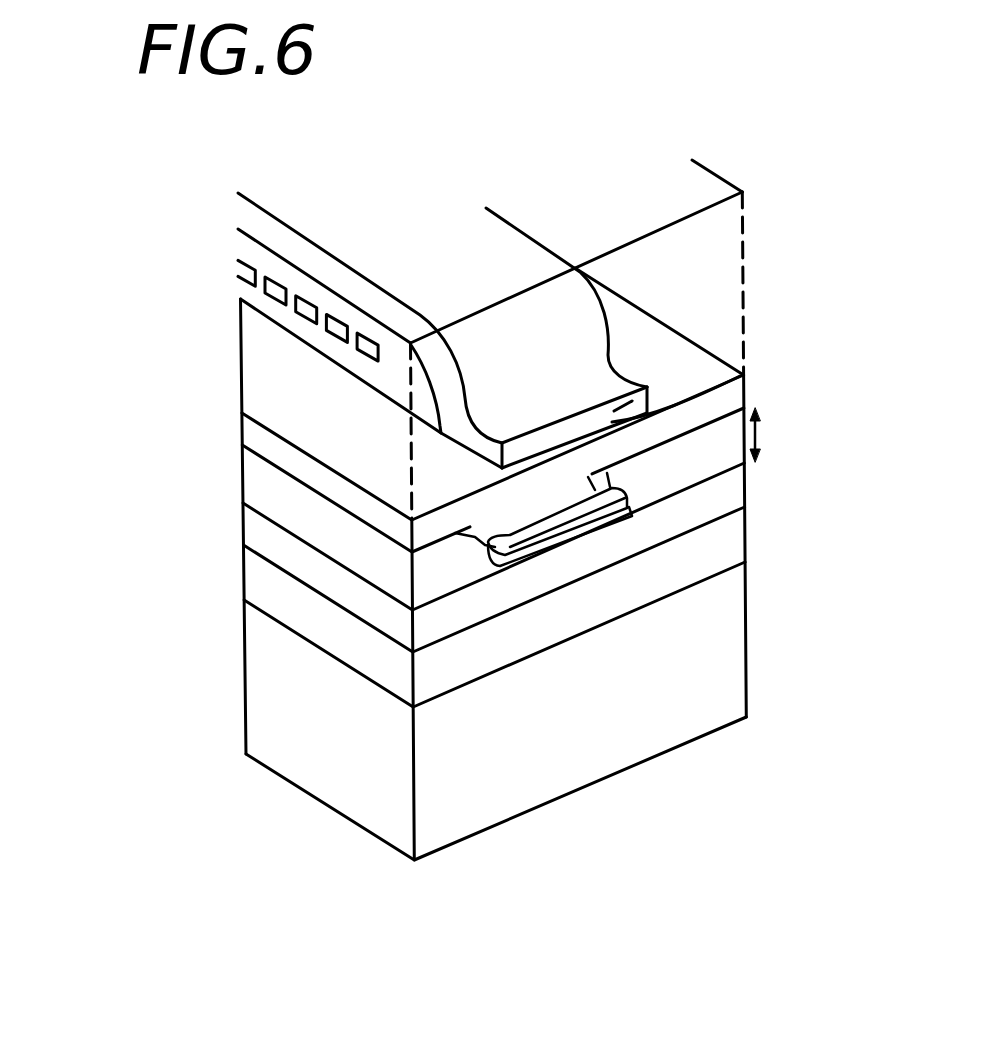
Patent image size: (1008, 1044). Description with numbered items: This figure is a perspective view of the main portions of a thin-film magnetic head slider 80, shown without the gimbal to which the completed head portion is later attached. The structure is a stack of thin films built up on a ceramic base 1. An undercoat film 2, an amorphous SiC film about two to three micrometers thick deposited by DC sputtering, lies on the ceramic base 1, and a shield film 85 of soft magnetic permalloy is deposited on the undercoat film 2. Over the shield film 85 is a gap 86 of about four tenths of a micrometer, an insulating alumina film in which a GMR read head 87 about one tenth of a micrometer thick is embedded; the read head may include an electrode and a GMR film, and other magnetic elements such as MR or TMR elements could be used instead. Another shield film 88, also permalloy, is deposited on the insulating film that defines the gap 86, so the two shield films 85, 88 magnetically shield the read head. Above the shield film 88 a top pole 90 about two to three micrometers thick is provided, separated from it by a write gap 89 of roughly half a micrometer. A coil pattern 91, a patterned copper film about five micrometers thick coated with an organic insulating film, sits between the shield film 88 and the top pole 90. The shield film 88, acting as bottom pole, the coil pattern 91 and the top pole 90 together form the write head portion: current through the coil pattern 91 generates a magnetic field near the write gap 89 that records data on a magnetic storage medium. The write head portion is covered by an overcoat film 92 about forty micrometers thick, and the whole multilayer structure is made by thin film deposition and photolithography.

The thin-film magnetic head slider 80 is at (152, 470).
The ceramic base 1 is at (738, 639).
The undercoat film 2 is at (730, 552).
The shield film 85 is at (730, 488).
The gap 86 is at (756, 433).
The GMR read head 87 is at (725, 473).
The shield film 88 is at (735, 400).
The write gap 89 is at (736, 371).
The top pole 90 is at (620, 422).
The coil pattern 91 is at (265, 291).
The protective overcoat layer 92 is at (724, 232).